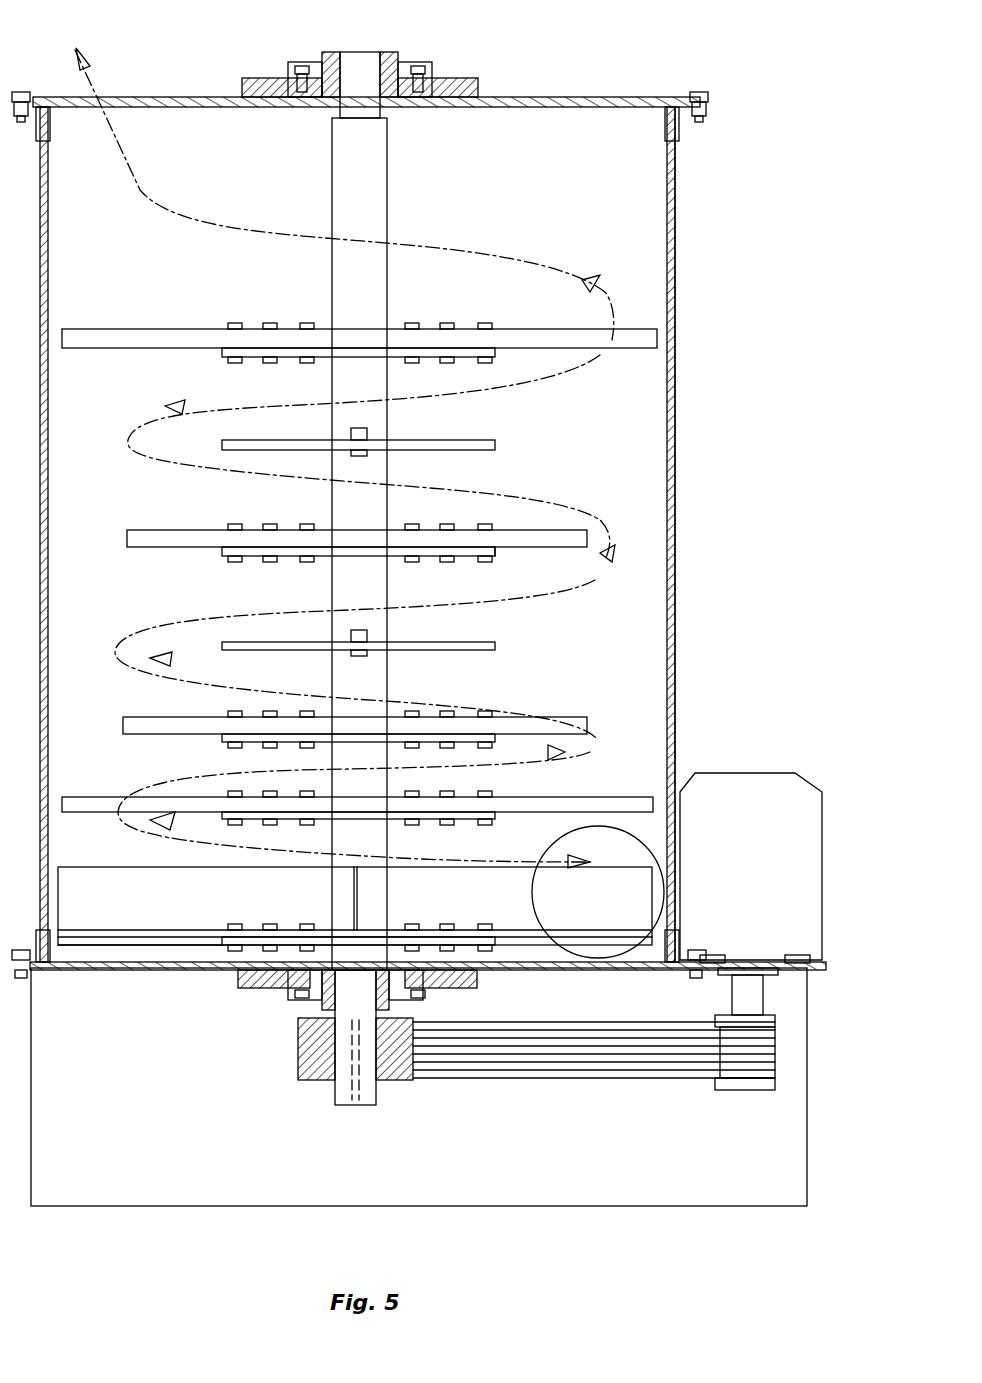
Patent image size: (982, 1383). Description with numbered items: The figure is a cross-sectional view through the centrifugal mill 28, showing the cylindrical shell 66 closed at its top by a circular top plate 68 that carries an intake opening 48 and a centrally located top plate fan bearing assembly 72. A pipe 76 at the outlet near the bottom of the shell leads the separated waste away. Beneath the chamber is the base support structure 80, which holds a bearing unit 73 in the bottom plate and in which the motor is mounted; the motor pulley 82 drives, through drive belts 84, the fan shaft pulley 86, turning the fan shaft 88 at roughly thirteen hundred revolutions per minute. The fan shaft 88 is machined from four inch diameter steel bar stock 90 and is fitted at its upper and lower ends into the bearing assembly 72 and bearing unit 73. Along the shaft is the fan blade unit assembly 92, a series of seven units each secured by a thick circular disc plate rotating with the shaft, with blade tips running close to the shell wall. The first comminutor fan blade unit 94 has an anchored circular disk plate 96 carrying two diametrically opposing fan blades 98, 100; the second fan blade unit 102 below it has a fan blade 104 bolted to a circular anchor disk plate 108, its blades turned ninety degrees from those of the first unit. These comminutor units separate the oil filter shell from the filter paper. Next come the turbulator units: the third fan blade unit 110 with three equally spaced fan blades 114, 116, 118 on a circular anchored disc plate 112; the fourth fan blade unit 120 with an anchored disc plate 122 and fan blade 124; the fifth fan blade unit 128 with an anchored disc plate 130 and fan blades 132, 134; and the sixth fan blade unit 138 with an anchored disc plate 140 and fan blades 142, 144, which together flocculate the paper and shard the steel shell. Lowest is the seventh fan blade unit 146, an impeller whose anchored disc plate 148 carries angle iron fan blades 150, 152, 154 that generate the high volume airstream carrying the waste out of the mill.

The centrifugal mill 28 is at (200, 1234).
The intake opening 48 is at (190, 100).
The cylindrical shell 66 is at (675, 225).
The circular top plate 68 is at (540, 100).
The top plate fan bearing assembly 72 is at (388, 92).
The bearing unit 73 is at (292, 990).
The pipe 76 is at (665, 878).
The base support structure 80 is at (148, 970).
The motor pulley 82 is at (742, 1092).
The drive belts 84 is at (458, 1082).
The fan shaft pulley 86 is at (302, 1050).
The fan shaft 88 is at (356, 1106).
The steel bar stock 90 is at (387, 203).
The fan blade unit assembly 92 is at (200, 255).
The first comminutor fan blade unit 94 is at (638, 328).
The anchored circular disk plate 96 is at (357, 350).
The fan blade 98 is at (525, 338).
The fan blade 100 is at (160, 338).
The second fan blade unit 102 is at (520, 452).
The fan blade 104 is at (353, 428).
The circular anchor disk plate 108 is at (450, 440).
The third fan blade unit 110 is at (600, 522).
The circular anchored disc plate 112 is at (495, 550).
The fan blade 114 is at (545, 540).
The fan blade 116 is at (365, 535).
The fan blade 118 is at (200, 540).
The fourth fan blade unit 120 is at (515, 642).
The anchored disc plate 122 is at (490, 650).
The fan blade 124 is at (358, 630).
The fifth fan blade unit 128 is at (605, 712).
The anchored disc plate 130 is at (222, 742).
The fan blade 132 is at (500, 722).
The fan blade 134 is at (180, 718).
The sixth fan blade unit 138 is at (645, 790).
The anchored disc plate 140 is at (365, 812).
The fan blade 142 is at (520, 805).
The fan blade 144 is at (170, 805).
The seventh fan blade unit 146 is at (625, 855).
The anchored disc plate 148 is at (118, 945).
The fan blade 150 is at (570, 917).
The fan blade 152 is at (352, 898).
The fan blade 154 is at (165, 867).